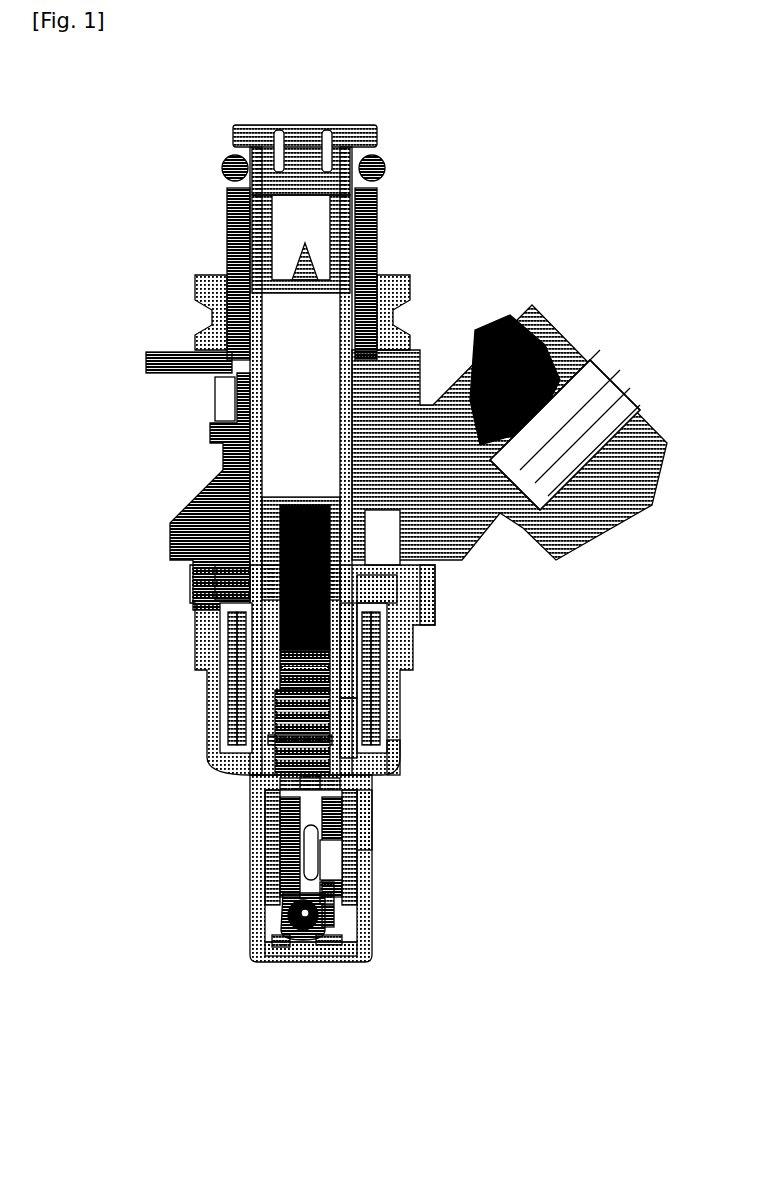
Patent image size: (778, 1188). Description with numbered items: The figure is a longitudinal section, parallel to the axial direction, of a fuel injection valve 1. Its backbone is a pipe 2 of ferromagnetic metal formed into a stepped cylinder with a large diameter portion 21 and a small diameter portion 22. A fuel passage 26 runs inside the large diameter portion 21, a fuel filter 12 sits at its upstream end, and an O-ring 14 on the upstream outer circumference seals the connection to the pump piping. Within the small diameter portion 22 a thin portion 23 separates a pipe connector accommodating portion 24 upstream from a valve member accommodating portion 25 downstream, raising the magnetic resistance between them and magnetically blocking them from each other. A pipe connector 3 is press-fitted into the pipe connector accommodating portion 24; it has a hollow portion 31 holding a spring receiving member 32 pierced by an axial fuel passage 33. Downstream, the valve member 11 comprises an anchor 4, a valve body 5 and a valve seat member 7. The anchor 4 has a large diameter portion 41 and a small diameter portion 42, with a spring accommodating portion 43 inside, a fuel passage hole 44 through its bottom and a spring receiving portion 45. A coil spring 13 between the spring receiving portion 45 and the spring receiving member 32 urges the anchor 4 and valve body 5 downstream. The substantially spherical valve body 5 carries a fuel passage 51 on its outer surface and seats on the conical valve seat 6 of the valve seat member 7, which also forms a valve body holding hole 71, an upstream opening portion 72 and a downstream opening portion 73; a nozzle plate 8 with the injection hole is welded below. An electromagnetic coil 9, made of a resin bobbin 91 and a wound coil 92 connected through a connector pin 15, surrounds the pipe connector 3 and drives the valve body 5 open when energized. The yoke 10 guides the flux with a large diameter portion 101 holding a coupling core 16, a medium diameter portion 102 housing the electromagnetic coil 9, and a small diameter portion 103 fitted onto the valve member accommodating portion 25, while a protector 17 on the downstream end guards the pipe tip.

The fuel injection valve 1 is at (430, 145).
The pipe 2 is at (252, 441).
The pipe connector 3 is at (253, 560).
The anchor 4 is at (128, 863).
The valve body 5 is at (290, 888).
The valve seat 6 is at (284, 945).
The valve seat member 7 is at (268, 917).
The nozzle plate 8 is at (293, 955).
The electromagnetic coil 9 is at (546, 676).
The yoke 10 is at (640, 540).
The valve member 11 is at (86, 958).
The fuel filter 12 is at (246, 138).
The coil spring 13 is at (282, 708).
The O-ring 14 is at (238, 171).
The connector pin 15 is at (572, 378).
The coupling core 16 is at (237, 587).
The protector 17 is at (248, 938).
The large diameter portion 21 is at (347, 297).
The small diameter portion 22 is at (352, 632).
The thin portion 23 is at (354, 733).
The pipe connector accommodating portion 24 is at (362, 594).
The valve member accommodating portion 25 is at (334, 857).
The fuel passage 26 is at (268, 328).
The hollow portion 31 is at (270, 570).
The spring receiving member 32 is at (282, 670).
The fuel passage 33 is at (282, 634).
The large diameter portion 41 is at (267, 794).
The small diameter portion 42 is at (279, 815).
The spring accommodating portion 43 is at (278, 741).
The fuel passage hole 44 is at (298, 798).
The spring receiving portion 45 is at (278, 774).
The fuel passage 51 is at (305, 918).
The valve body holding hole 71 is at (335, 913).
The upstream opening portion 72 is at (337, 887).
The downstream opening portion 73 is at (326, 938).
The bobbin 91 is at (382, 708).
The coil 92 is at (372, 688).
The large diameter portion 101 is at (440, 562).
The medium diameter portion 102 is at (389, 762).
The small diameter portion 103 is at (360, 810).